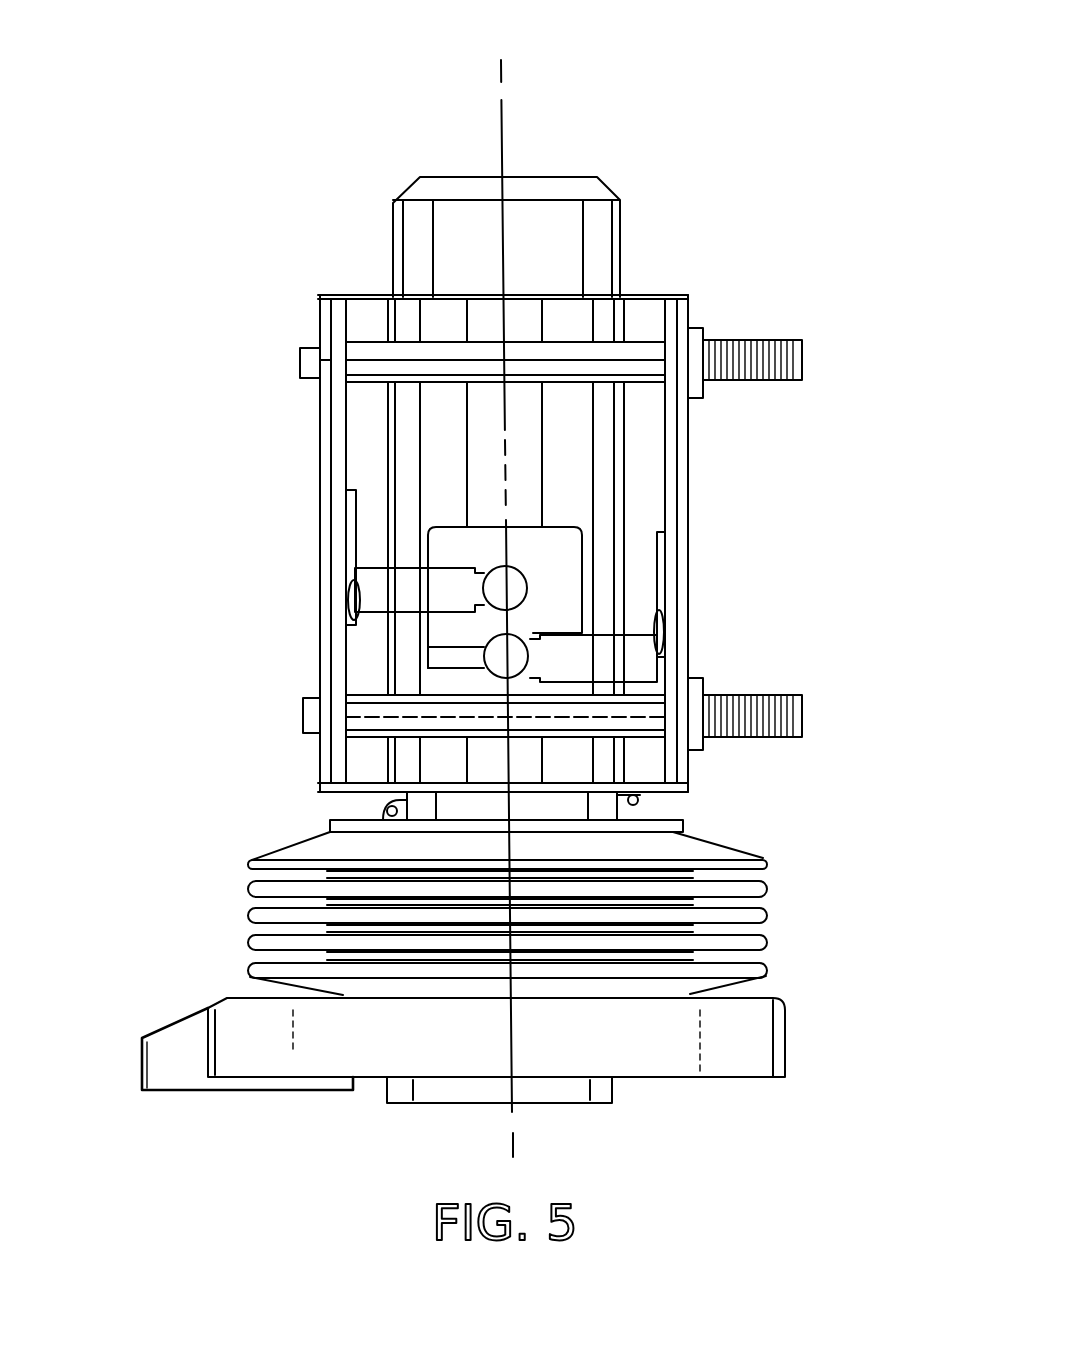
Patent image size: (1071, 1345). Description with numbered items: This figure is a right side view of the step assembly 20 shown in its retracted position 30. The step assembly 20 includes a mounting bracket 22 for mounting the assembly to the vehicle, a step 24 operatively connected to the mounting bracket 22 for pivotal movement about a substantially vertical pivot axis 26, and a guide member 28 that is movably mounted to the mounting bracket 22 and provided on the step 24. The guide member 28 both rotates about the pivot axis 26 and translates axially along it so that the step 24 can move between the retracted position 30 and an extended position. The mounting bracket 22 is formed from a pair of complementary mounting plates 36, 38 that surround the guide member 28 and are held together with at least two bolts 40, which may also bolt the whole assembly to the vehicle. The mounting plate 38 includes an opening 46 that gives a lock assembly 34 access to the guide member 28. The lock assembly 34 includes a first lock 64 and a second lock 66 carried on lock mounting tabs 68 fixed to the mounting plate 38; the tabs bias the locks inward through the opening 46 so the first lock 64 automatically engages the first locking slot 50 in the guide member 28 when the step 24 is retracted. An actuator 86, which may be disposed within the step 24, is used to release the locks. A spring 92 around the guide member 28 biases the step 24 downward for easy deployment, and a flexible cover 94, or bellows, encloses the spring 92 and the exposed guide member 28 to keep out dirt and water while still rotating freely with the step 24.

The step assembly 20 is at (257, 136).
The mounting bracket 22 is at (268, 298).
The step 24 is at (760, 1038).
The pivot axis 26 is at (502, 64).
The guide member 28 is at (573, 212).
The retracted position 30 is at (877, 288).
The lock assembly 34 is at (547, 580).
The mounting plate 36 is at (320, 402).
The mounting plate 38 is at (367, 457).
The bolts 40 is at (747, 380).
The opening 46 is at (430, 527).
The first locking slot 50 is at (435, 657).
The first lock 64 is at (495, 665).
The second lock 66 is at (487, 578).
The lock mounting tabs 68 is at (390, 592).
The actuator 86 is at (173, 1055).
The spring 92 is at (640, 802).
The flexible cover 94 is at (732, 858).